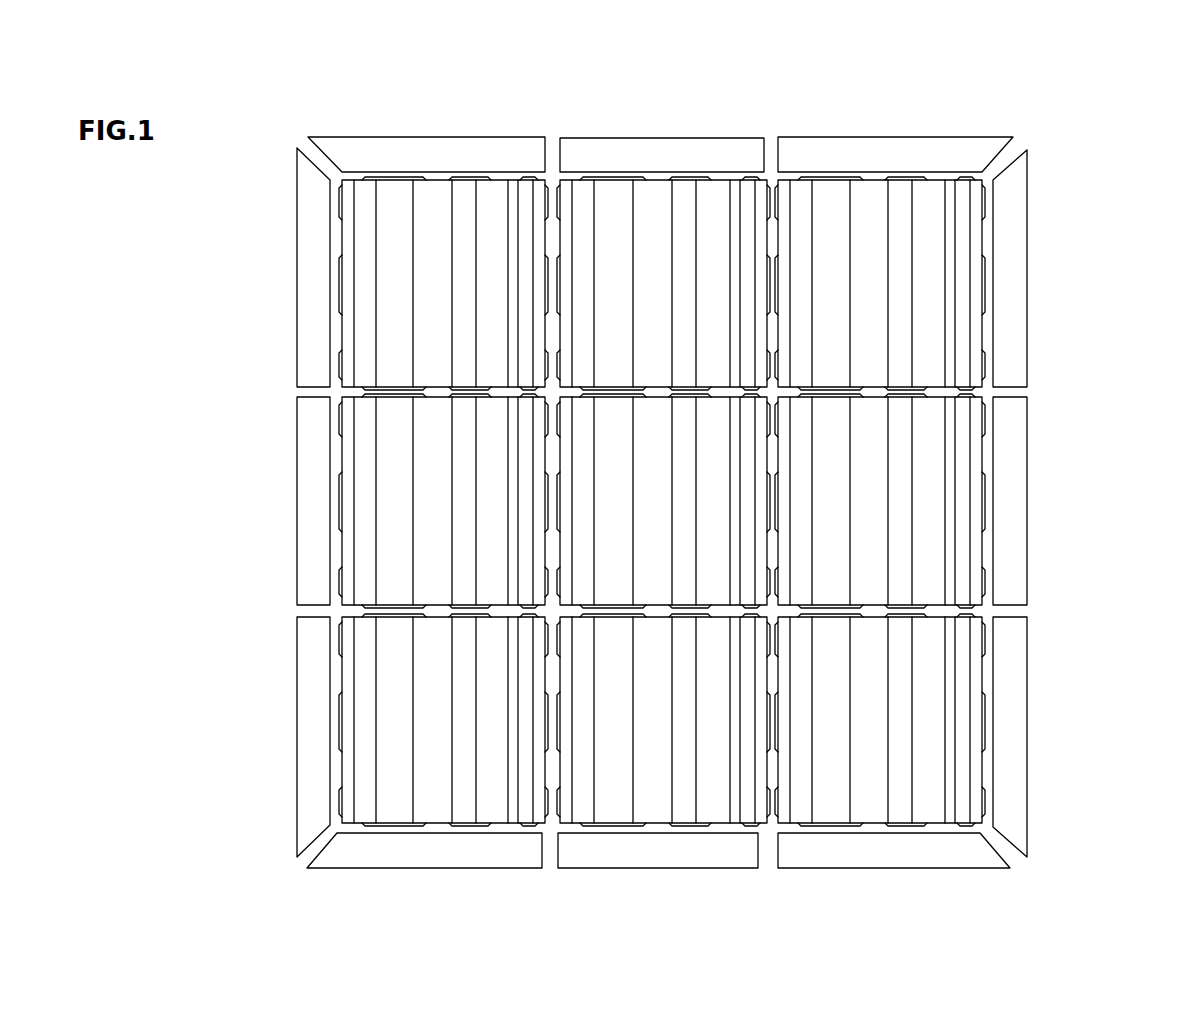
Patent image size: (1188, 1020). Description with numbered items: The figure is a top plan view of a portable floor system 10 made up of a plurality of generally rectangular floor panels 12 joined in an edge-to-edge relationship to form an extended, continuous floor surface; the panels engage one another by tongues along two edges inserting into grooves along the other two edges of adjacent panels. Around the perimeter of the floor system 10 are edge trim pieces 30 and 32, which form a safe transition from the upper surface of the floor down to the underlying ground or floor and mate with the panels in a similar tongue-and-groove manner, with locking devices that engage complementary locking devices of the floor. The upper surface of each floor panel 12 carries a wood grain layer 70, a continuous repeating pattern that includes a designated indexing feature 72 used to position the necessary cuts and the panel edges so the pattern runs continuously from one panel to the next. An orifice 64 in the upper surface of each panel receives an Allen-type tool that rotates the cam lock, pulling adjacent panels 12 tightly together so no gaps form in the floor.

The portable floor system 10 is at (1130, 172).
The floor panel 12 is at (360, 428).
The edge trim piece 30 is at (625, 147).
The edge trim piece 32 is at (438, 145).
The orifice 64 is at (398, 383).
The wood grain layer 70 is at (497, 198).
The indexing feature 72 is at (453, 223).